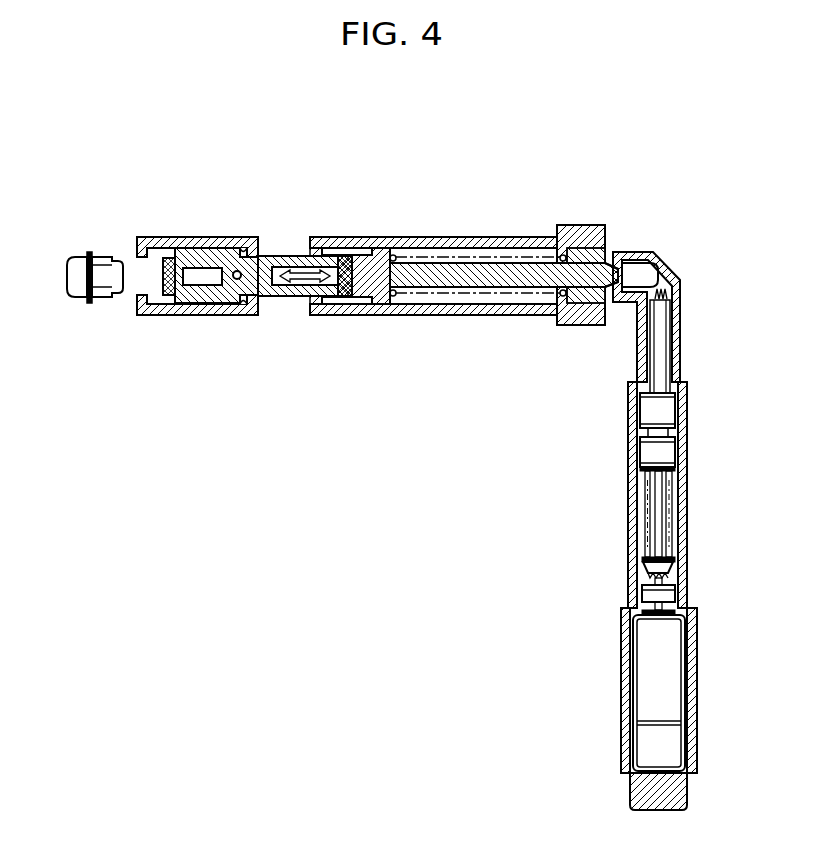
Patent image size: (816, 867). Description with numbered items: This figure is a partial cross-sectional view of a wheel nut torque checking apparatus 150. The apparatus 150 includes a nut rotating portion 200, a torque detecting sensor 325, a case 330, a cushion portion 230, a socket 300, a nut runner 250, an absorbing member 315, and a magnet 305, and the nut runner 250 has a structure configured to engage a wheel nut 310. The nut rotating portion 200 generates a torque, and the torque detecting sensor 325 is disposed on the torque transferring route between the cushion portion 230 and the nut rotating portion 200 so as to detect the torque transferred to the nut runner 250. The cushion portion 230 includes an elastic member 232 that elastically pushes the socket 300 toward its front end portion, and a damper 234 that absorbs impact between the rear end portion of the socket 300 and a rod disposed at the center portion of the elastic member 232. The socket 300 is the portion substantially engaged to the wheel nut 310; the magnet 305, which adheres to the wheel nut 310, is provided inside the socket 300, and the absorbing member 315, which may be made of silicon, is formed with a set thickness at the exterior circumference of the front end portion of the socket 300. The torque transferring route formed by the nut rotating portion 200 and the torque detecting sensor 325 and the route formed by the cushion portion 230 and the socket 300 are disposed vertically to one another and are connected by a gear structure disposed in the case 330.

The wheel nut torque checking apparatus 150 is at (620, 201).
The nut rotating portion 200 is at (665, 672).
The cushion portion 230 is at (464, 228).
The elastic member 232 is at (490, 257).
The damper 234 is at (512, 180).
The nut runner 250 is at (243, 301).
The socket 300 is at (233, 295).
The magnet 305 is at (167, 252).
The wheel nut 310 is at (78, 265).
The absorbing member 315 is at (147, 313).
The torque detecting sensor 325 is at (663, 411).
The case 330 is at (680, 355).